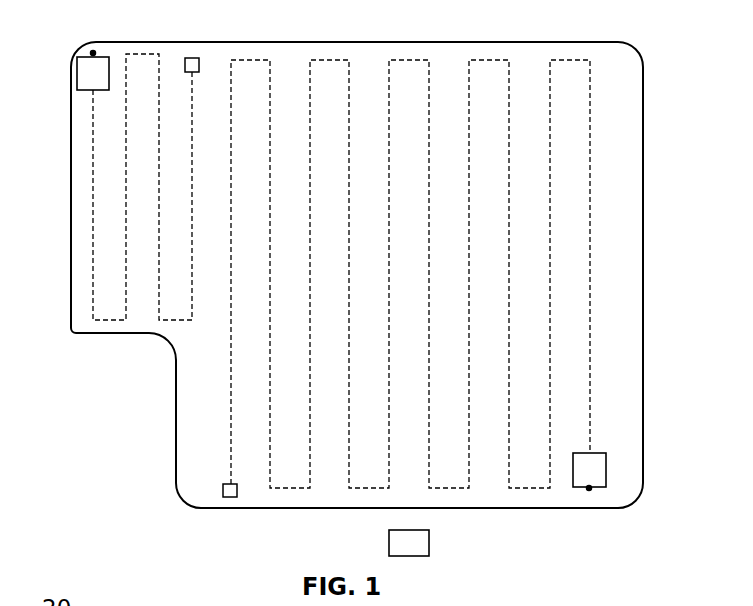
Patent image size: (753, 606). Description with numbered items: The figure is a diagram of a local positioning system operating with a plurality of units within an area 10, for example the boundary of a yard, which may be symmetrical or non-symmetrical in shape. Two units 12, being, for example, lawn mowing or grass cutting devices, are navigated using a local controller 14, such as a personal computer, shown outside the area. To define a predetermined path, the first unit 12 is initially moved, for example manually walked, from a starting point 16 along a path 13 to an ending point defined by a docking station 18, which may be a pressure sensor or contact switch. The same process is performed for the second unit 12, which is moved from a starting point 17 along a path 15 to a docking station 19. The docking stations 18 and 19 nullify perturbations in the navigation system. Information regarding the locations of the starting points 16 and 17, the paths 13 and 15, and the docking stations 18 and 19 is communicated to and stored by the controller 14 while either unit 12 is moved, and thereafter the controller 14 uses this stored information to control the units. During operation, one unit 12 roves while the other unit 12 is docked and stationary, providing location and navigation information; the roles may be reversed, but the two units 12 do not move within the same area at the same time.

The area 10 is at (120, 334).
The unit 12 is at (77, 73).
The path 13 is at (91, 218).
The local controller 14 is at (429, 541).
The path 15 is at (590, 408).
The starting point 16 is at (93, 53).
The starting point 17 is at (589, 488).
The docking station 18 is at (192, 58).
The docking station 19 is at (229, 497).